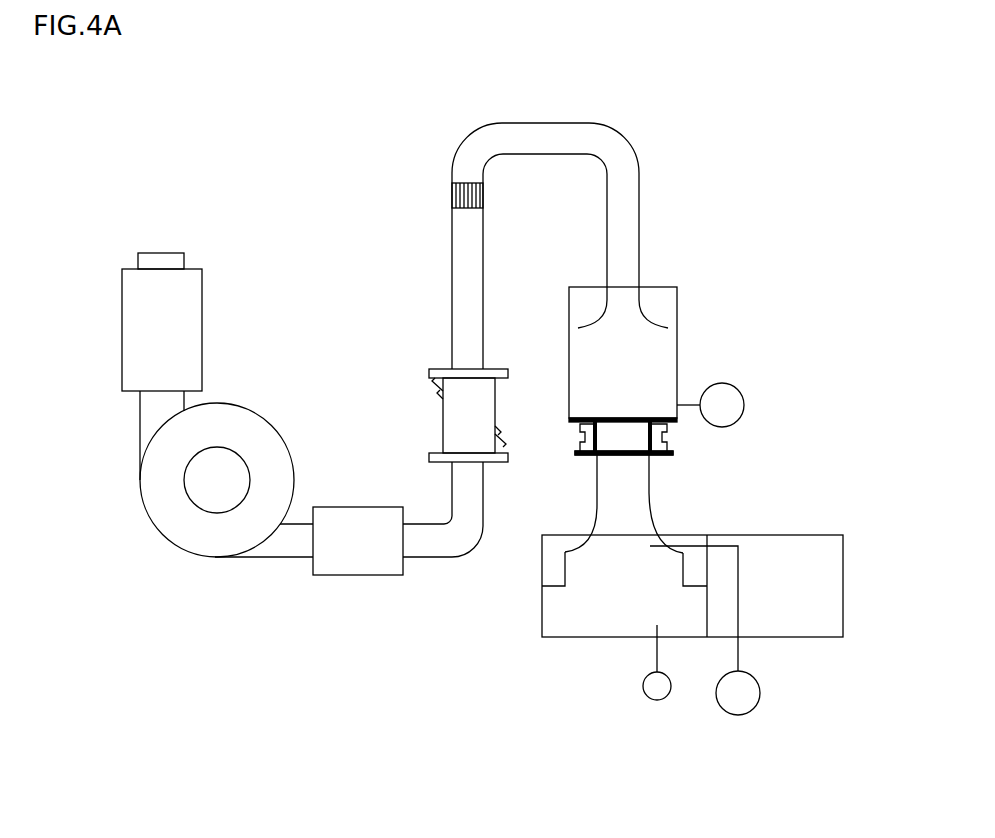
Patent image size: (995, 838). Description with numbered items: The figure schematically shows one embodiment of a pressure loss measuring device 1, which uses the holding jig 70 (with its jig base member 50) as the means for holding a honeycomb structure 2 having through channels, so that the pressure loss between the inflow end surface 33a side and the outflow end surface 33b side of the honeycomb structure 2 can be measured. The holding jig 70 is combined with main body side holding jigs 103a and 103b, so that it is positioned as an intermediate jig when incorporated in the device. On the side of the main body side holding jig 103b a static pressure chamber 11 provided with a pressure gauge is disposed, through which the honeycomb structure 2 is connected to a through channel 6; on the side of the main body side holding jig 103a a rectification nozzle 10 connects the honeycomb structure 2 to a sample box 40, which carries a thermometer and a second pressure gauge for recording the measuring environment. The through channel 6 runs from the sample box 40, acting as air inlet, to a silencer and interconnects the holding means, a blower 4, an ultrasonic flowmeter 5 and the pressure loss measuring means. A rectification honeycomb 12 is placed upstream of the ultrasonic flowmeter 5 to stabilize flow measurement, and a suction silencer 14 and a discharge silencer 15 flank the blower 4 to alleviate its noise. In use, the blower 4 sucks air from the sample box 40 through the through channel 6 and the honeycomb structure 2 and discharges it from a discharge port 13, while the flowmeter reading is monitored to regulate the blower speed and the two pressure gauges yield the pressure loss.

The pressure loss measuring device 1 is at (328, 203).
The honeycomb structure 2 is at (621, 442).
The blower 4 is at (162, 523).
The ultrasonic flowmeter 5 is at (443, 430).
The through channel 6 is at (140, 413).
The rectification nozzle 10 is at (650, 506).
The static pressure chamber 11 is at (678, 330).
The rectification honeycomb 12 is at (452, 193).
The discharge port 13 is at (164, 253).
The suction silencer 14 is at (363, 576).
The discharge silencer 15 is at (122, 326).
The inflow end surface 33a is at (598, 502).
The outflow end surface 33b is at (600, 403).
The sample box 40 is at (588, 632).
The jig base member 50 is at (662, 441).
The holding jig 70 is at (717, 459).
The main body side holding jig 103a is at (673, 456).
The main body side holding jig 103b is at (662, 425).